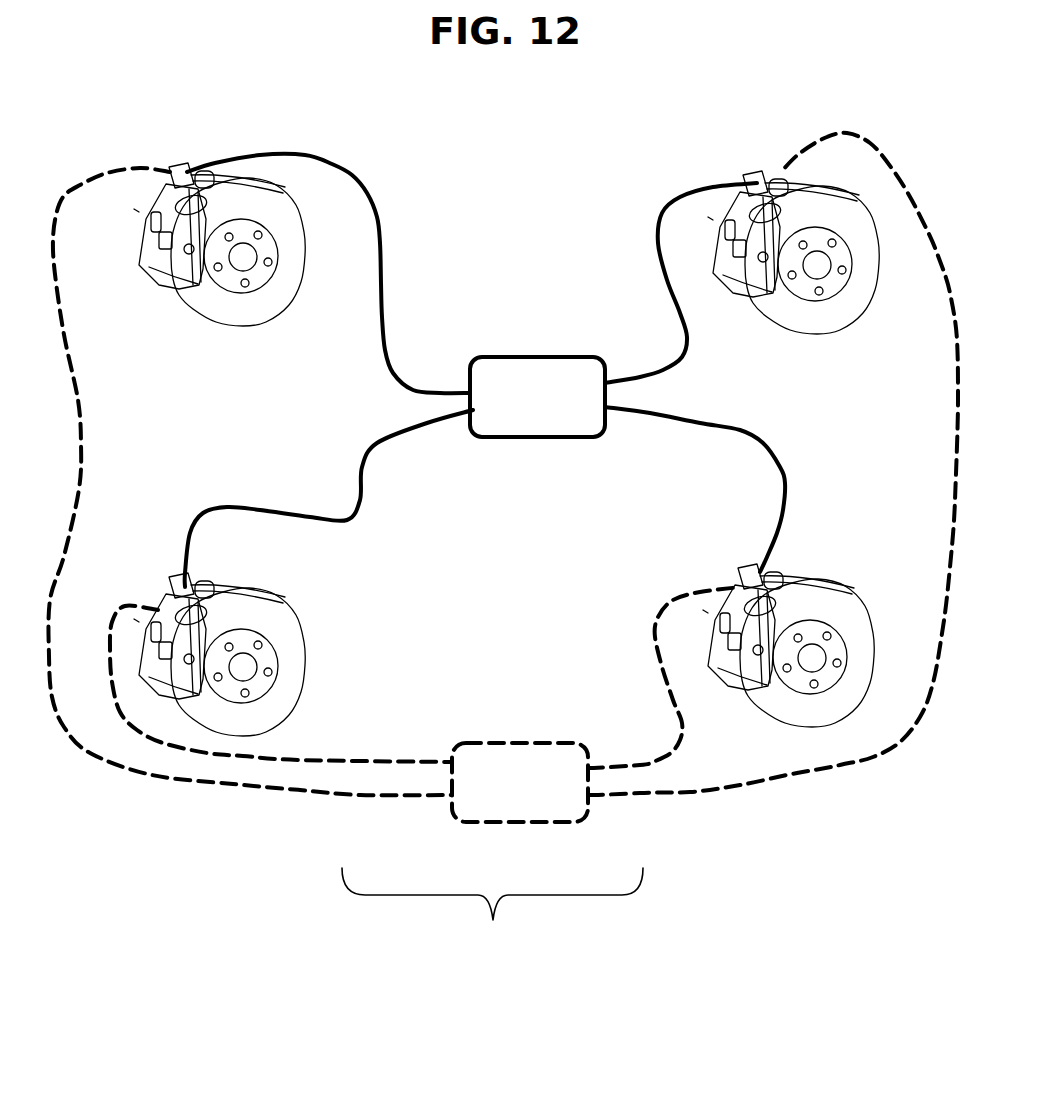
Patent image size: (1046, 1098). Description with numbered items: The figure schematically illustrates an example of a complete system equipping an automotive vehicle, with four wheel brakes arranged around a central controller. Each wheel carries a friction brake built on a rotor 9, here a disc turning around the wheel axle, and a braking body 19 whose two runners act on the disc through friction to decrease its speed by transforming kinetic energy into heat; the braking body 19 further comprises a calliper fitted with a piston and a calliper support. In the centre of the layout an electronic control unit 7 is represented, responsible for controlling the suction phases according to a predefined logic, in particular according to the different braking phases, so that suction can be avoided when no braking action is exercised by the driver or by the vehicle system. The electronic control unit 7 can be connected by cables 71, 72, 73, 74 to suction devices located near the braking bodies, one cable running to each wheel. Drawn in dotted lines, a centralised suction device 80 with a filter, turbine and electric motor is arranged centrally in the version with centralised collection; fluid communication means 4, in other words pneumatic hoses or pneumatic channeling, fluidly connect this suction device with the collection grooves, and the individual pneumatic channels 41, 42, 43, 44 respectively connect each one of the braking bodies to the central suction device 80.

The electronic control unit 7 is at (502, 345).
The cable 71 is at (374, 451).
The cable 72 is at (664, 421).
The cable 73 is at (395, 377).
The cable 74 is at (689, 346).
The braking body 19 is at (171, 575).
The rotor 9 is at (306, 637).
The centralised suction device 80 is at (523, 726).
The fluid communication means 4 is at (492, 910).
The pneumatic channel 41 is at (358, 797).
The pneumatic channel 42 is at (663, 797).
The pneumatic channel 43 is at (398, 765).
The pneumatic channel 44 is at (617, 771).